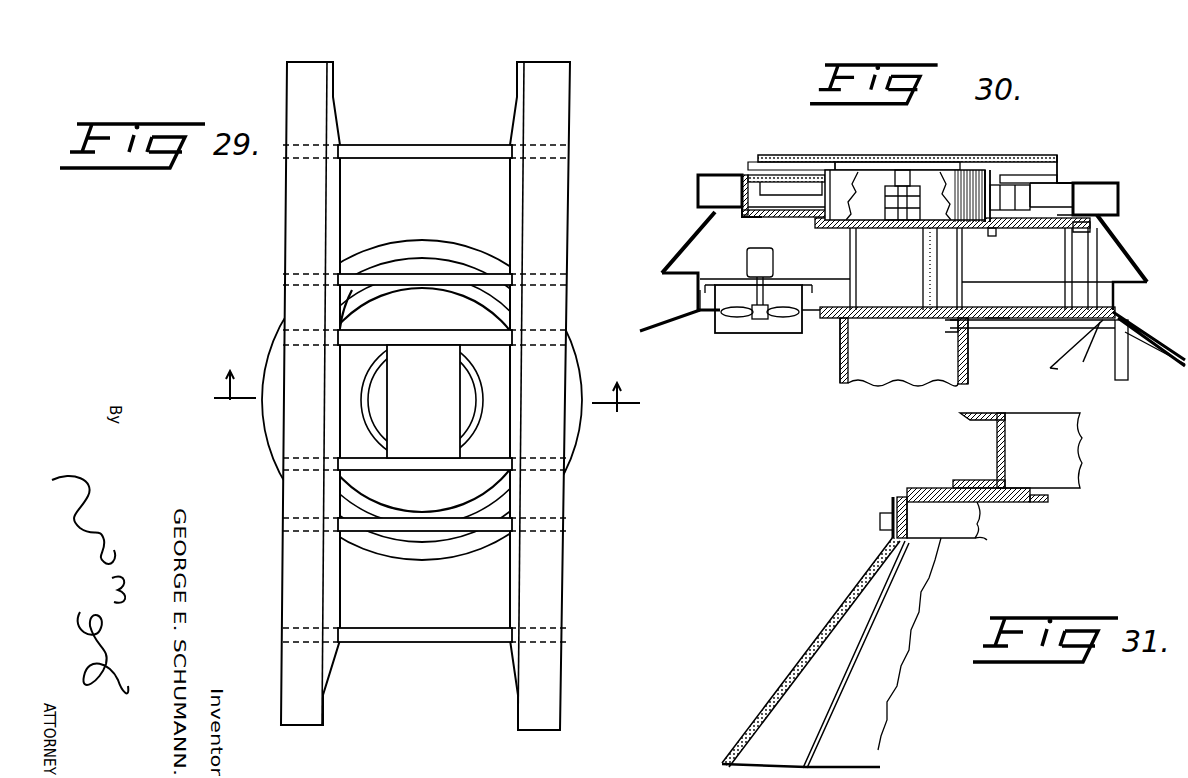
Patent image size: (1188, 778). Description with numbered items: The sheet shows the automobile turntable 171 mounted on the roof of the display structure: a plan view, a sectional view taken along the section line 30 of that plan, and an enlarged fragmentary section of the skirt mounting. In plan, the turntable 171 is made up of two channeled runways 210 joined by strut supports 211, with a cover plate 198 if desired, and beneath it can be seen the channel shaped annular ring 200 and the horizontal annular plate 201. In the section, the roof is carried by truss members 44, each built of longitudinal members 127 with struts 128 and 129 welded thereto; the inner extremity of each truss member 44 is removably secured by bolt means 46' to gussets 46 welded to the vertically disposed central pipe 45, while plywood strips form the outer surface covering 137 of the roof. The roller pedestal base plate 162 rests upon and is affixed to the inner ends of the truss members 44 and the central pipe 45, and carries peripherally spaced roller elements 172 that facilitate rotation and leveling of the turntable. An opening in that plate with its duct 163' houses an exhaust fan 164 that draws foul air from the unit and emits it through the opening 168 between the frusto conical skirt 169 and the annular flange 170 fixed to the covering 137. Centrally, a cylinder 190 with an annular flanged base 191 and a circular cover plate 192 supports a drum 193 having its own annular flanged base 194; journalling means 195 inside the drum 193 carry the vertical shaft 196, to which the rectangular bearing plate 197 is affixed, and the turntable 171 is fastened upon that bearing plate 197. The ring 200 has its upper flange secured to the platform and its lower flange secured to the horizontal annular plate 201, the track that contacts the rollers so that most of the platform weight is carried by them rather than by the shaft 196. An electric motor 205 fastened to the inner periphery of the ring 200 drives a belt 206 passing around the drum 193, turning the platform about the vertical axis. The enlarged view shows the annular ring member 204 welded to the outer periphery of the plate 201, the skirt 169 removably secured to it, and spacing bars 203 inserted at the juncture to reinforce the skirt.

In FIG. 29, the section line 30— 30 is at (427, 382).
In FIG. 30, the truss member 44 is at (1054, 368).
In FIG. 30, the central pipe 45 is at (876, 383).
In FIG. 30, the gusset 46 is at (1032, 339).
In FIG. 30, the bolt means 46' is at (1004, 303).
In FIG. 30, the longitudinal member 127 is at (1160, 348).
In FIG. 30, the strut 128 is at (1086, 364).
In FIG. 30, the strut 129 is at (1130, 378).
In FIG. 30, the outer surface covering 137 is at (646, 327).
In FIG. 30, the roller pedestal base plate 162 is at (917, 321).
In FIG. 30, the duct 163' is at (743, 320).
In FIG. 30, the exhaust fan 164 is at (772, 319).
In FIG. 30, the opening 168 is at (690, 288).
In FIG. 29, the frusto conical skirt 169 is at (460, 222).
In FIG. 30, the frusto conical skirt 169 is at (676, 258).
In FIG. 31, the frusto conical skirt 169 is at (796, 657).
In FIG. 30, the annular flange 170 is at (1120, 300).
In FIG. 29, the automobile turntable 171 is at (578, 226).
In FIG. 30, the automobile turntable 171 is at (1060, 172).
In FIG. 30, the roller element 172 is at (1065, 262).
In FIG. 30, the cylinder 190 is at (850, 260).
In FIG. 30, the annular flanged base 191 is at (970, 340).
In FIG. 30, the circular cover plate 192 is at (994, 230).
In FIG. 29, the drum 193 is at (498, 368).
In FIG. 30, the drum 193 is at (802, 192).
In FIG. 29, the annular flanged base 194 is at (488, 412).
In FIG. 30, the annular flanged base 194 is at (820, 226).
In FIG. 30, the journalling means 195 is at (901, 223).
In FIG. 30, the vertical shaft 196 is at (902, 165).
In FIG. 29, the bearing plate 197 is at (423, 401).
In FIG. 30, the bearing plate 197 is at (957, 170).
In FIG. 30, the cover plate 198 is at (833, 153).
In FIG. 29, the channel shaped annular ring 200 is at (497, 305).
In FIG. 30, the channel shaped annular ring 200 is at (748, 197).
In FIG. 31, the channel shaped annular ring 200 is at (1012, 451).
In FIG. 29, the horizontal annular plate 201 is at (352, 290).
In FIG. 30, the horizontal annular plate 201 is at (738, 218).
In FIG. 31, the horizontal annular plate 201 is at (1019, 506).
In FIG. 31, the spacing bar 203 is at (840, 698).
In FIG. 31, the annular ring member 204 is at (904, 492).
In FIG. 30, the electric motor 205 is at (1042, 175).
In FIG. 30, the belt 206 is at (1005, 183).
In FIG. 29, the channeled runway 210 is at (304, 62).
In FIG. 30, the channeled runway 210 is at (735, 160).
In FIG. 29, the strut support 211 is at (448, 131).
In FIG. 30, the strut support 211 is at (780, 140).